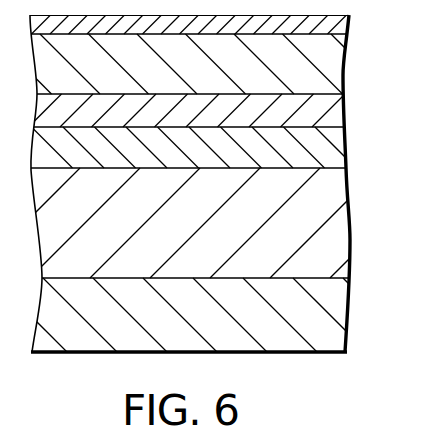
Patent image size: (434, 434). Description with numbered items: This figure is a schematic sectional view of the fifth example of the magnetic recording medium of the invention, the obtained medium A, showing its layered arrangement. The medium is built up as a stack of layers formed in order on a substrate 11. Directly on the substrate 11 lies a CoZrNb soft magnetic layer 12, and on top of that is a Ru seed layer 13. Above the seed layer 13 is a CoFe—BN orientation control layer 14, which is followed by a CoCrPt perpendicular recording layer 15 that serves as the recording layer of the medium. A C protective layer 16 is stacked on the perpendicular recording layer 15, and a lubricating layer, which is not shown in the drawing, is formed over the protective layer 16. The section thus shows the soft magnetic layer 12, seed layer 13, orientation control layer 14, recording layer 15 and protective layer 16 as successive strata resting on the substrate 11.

The substrate 11 is at (332, 330).
The CoZrNb soft magnetic layer 12 is at (332, 237).
The Ru seed layer 13 is at (332, 155).
The CoFe—BN orientation control layer 14 is at (332, 117).
The CoCrPt perpendicular recording layer 15 is at (332, 70).
The C protective layer 16 is at (340, 22).